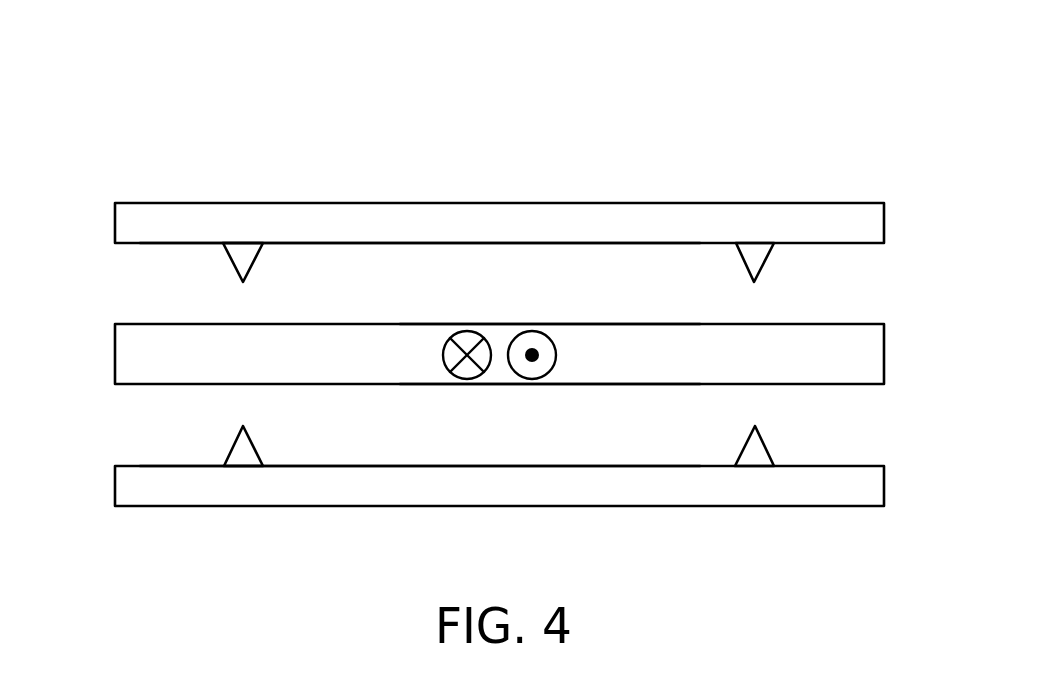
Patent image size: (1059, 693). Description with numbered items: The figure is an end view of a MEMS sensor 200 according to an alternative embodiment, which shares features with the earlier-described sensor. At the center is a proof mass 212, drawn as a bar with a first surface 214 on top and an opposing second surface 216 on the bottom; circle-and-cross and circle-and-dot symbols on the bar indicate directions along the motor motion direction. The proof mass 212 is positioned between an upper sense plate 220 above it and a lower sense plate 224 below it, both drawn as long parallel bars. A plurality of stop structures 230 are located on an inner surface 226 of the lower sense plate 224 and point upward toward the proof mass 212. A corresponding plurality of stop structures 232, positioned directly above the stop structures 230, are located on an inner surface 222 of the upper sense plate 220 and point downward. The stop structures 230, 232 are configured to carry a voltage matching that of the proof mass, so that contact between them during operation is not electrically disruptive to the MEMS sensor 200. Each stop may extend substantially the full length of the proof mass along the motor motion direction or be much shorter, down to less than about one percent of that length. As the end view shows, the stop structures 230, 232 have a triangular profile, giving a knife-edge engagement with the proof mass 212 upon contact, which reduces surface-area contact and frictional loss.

The MEMS sensor 200 is at (643, 114).
The proof mass 212 is at (113, 367).
The first surface 214 is at (582, 323).
The second surface 216 is at (403, 385).
The upper sense plate 220 is at (113, 227).
The inner surface 222 is at (189, 244).
The lower sense plate 224 is at (113, 489).
The inner surface 226 is at (203, 465).
The stop structures 230 is at (260, 453).
The stop structures 232 is at (257, 260).